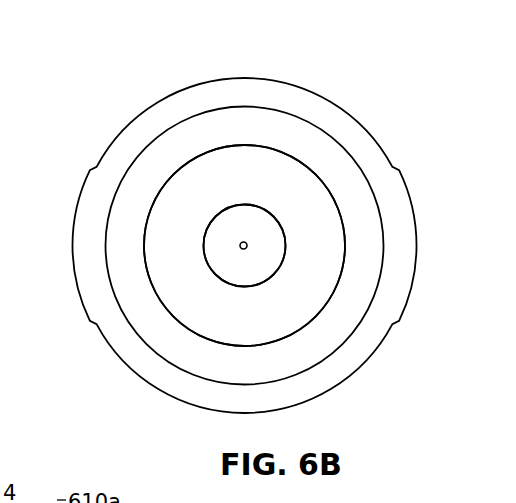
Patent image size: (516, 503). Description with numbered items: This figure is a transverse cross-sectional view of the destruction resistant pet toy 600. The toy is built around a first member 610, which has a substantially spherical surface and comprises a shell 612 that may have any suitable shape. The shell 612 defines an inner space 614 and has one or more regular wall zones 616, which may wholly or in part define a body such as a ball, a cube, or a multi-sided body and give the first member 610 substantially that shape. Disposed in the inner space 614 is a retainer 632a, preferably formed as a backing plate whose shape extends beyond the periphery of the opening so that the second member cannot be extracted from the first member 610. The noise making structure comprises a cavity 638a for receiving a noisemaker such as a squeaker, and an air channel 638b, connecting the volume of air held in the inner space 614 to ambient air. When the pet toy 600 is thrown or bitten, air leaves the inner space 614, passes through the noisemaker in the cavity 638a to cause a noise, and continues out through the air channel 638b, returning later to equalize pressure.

The destruction resistant pet toy 600 is at (393, 105).
The first member 610 is at (203, 100).
The shell 612 is at (199, 198).
The inner space 614 is at (295, 190).
The regular wall zones 616 is at (265, 93).
The cavity 638a is at (248, 222).
The air channel 638b is at (240, 243).
The retainer 632a is at (222, 262).